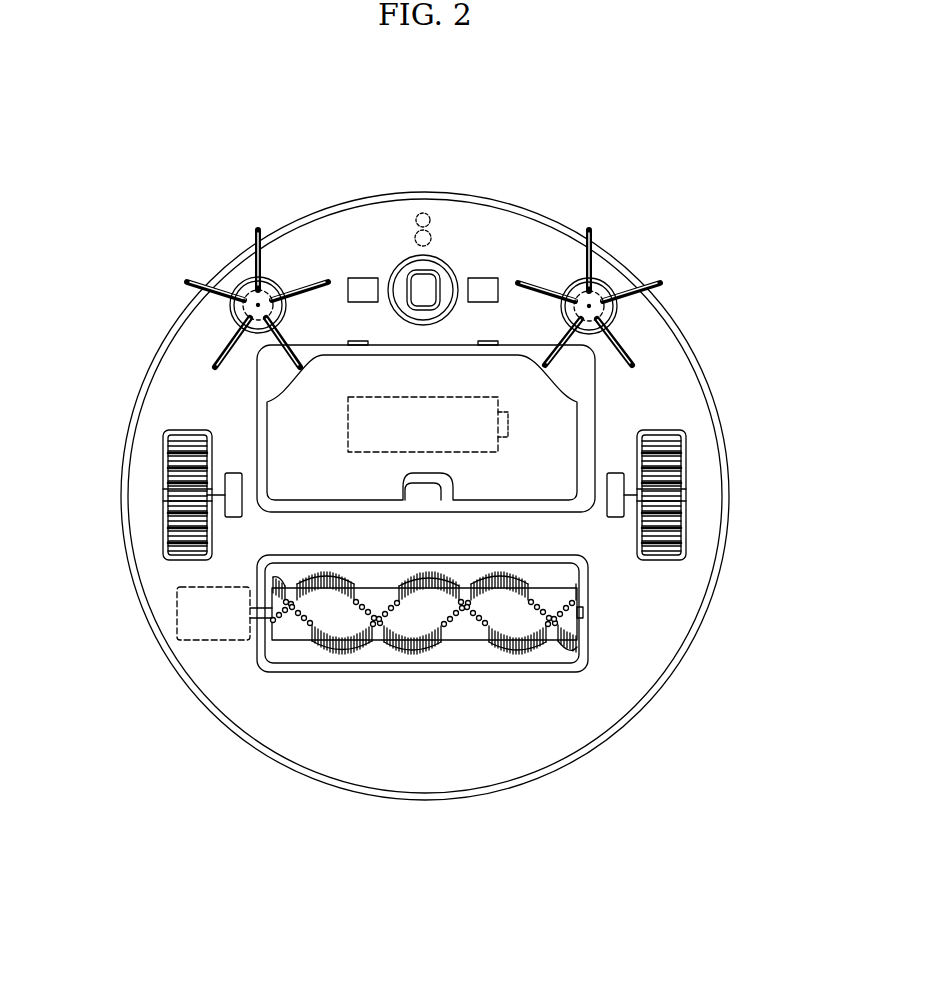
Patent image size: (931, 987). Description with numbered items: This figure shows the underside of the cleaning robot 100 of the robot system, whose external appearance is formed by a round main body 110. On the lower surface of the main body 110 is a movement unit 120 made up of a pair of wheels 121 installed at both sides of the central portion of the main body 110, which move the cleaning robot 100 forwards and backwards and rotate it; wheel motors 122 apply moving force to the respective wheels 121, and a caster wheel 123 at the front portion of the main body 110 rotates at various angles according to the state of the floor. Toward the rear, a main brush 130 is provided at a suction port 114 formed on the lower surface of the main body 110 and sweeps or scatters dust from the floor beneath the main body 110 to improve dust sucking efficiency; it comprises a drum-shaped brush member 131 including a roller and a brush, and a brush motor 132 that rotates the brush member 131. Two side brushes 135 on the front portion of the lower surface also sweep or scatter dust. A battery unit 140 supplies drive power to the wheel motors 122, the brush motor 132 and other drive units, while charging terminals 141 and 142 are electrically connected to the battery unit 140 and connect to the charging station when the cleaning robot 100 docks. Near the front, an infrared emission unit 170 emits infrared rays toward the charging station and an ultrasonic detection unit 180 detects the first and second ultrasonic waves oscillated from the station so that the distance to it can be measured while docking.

The cleaning robot 100 is at (440, 100).
The main body 110 is at (676, 658).
The suction port 114 is at (565, 573).
The movement unit 120 is at (429, 436).
The wheels 121 is at (178, 466).
The wheel motors 122 is at (233, 478).
The caster wheel 123 is at (428, 277).
The main brush 130 is at (423, 690).
The brush member 131 is at (288, 633).
The brush motor 132 is at (177, 610).
The side brushes 135 is at (238, 284).
The battery unit 140 is at (510, 427).
The charging terminal 141 is at (362, 286).
The charging terminal 142 is at (483, 286).
The infrared emission unit 170 is at (428, 213).
The ultrasonic detection unit 180 is at (415, 240).